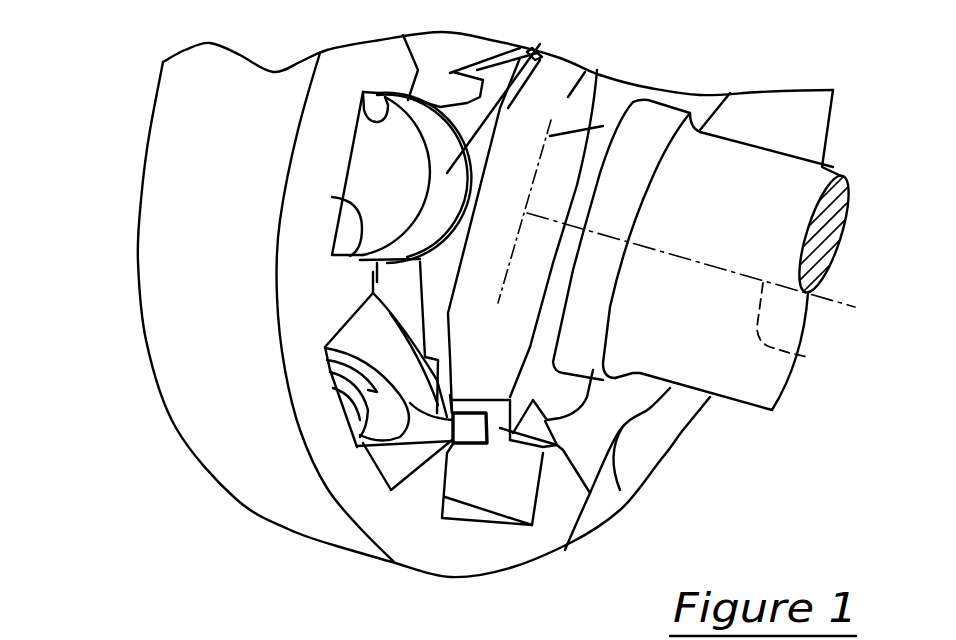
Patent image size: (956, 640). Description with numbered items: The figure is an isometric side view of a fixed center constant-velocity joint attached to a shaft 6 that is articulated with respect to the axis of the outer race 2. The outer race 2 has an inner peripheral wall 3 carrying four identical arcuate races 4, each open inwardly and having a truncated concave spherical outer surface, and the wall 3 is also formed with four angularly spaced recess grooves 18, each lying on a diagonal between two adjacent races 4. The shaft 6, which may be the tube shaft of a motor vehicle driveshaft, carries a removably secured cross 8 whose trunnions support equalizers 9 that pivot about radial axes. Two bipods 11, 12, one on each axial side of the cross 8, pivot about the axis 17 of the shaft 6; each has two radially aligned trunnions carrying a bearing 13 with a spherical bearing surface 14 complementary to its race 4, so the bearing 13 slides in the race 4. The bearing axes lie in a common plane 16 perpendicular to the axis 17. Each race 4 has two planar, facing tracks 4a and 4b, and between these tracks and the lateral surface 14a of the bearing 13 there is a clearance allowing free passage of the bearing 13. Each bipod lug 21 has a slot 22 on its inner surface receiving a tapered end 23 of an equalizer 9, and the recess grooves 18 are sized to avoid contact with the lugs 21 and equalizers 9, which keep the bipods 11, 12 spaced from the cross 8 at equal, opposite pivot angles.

The outer race 2 is at (443, 583).
The inner peripheral wall 3 is at (313, 432).
The arcuate race 4 is at (343, 138).
The track 4a is at (340, 200).
The track 4b is at (357, 105).
The shaft 6 is at (750, 177).
The cross 8 is at (390, 283).
The equalizer 9 is at (362, 340).
The bipod 11 is at (600, 70).
The bipod 12 is at (675, 91).
The bearing 13 is at (338, 178).
The spherical bearing surface 14 is at (408, 190).
The lateral surface 14a is at (507, 92).
The plane 16 is at (616, 115).
The axis 17 is at (793, 352).
The recess groove 18 is at (363, 467).
The lug 21 is at (547, 455).
The slot 22 is at (458, 430).
The end 23 is at (510, 440).